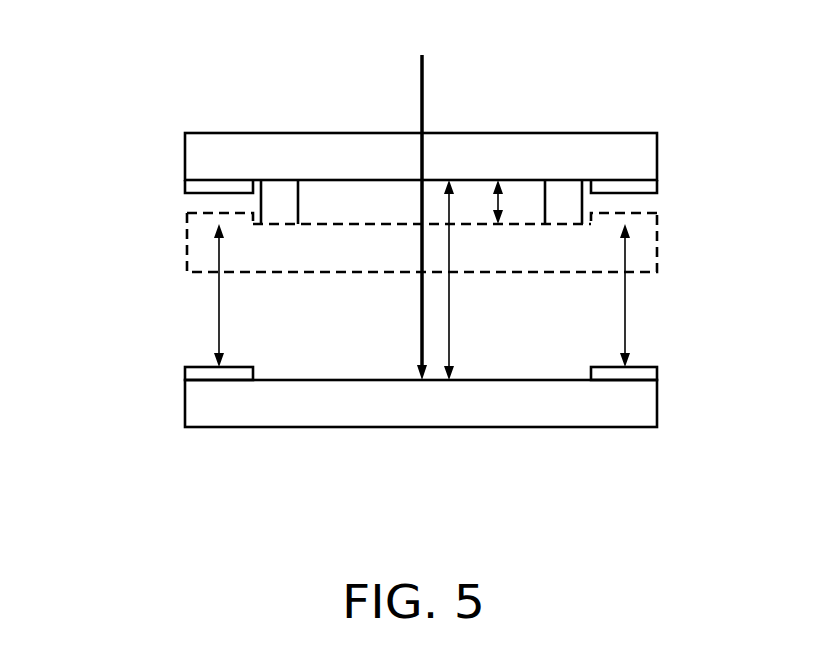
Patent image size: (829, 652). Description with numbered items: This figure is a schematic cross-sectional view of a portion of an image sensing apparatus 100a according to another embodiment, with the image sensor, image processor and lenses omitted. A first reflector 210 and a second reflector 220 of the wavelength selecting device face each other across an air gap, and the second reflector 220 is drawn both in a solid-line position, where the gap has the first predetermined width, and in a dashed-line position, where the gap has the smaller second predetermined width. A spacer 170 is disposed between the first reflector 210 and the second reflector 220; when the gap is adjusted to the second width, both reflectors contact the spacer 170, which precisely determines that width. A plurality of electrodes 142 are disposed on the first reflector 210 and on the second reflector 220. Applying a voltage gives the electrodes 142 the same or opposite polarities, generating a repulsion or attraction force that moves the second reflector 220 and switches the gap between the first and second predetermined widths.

The first reflector 210 is at (650, 160).
The second reflector 220 is at (650, 247).
The electrodes 142 is at (197, 188).
The spacer 170 is at (280, 193).
The image sensing apparatus 100a is at (668, 493).